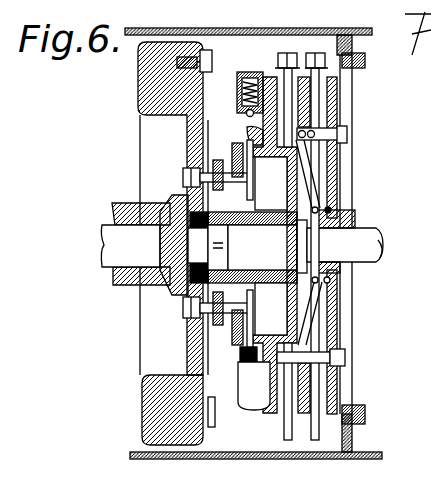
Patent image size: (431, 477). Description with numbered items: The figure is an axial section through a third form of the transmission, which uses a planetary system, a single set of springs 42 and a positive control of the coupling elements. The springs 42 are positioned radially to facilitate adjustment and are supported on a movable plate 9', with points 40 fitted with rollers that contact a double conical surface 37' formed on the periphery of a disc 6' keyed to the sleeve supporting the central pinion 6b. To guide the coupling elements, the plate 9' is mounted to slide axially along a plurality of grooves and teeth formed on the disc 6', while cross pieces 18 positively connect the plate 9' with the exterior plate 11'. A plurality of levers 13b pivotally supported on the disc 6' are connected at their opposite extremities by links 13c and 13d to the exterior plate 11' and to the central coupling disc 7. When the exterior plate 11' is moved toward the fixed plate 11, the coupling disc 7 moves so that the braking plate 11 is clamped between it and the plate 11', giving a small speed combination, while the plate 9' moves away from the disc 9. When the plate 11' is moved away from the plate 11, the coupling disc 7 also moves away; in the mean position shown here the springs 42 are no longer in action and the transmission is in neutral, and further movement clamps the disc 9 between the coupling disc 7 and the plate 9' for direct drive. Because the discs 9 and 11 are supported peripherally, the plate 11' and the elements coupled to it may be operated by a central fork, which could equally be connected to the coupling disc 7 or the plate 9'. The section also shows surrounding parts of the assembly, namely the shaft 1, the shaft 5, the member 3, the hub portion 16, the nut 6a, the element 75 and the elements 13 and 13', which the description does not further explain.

The points 40 is at (190, 63).
The springs 42 is at (250, 75).
The movable plate 9' is at (282, 221).
The disc 9 is at (306, 221).
The washer 75 is at (302, 77).
The central coupling disc 7 is at (318, 95).
The fixed plate 11 is at (346, 245).
The exterior plate 11' is at (363, 245).
The links 13c is at (312, 130).
The levers 13b is at (322, 165).
The disc 6' is at (290, 230).
The link 13 is at (367, 196).
The block 13' is at (370, 237).
The shaft 5 is at (355, 244).
The links 13d is at (332, 293).
The cross pieces 18 is at (325, 377).
The hub 16 is at (155, 409).
The nut 6a is at (178, 294).
The shaft 1 is at (125, 238).
The central pinion 6b is at (182, 190).
The clutch member 3 is at (207, 147).
The double conical surface 37' is at (159, 208).